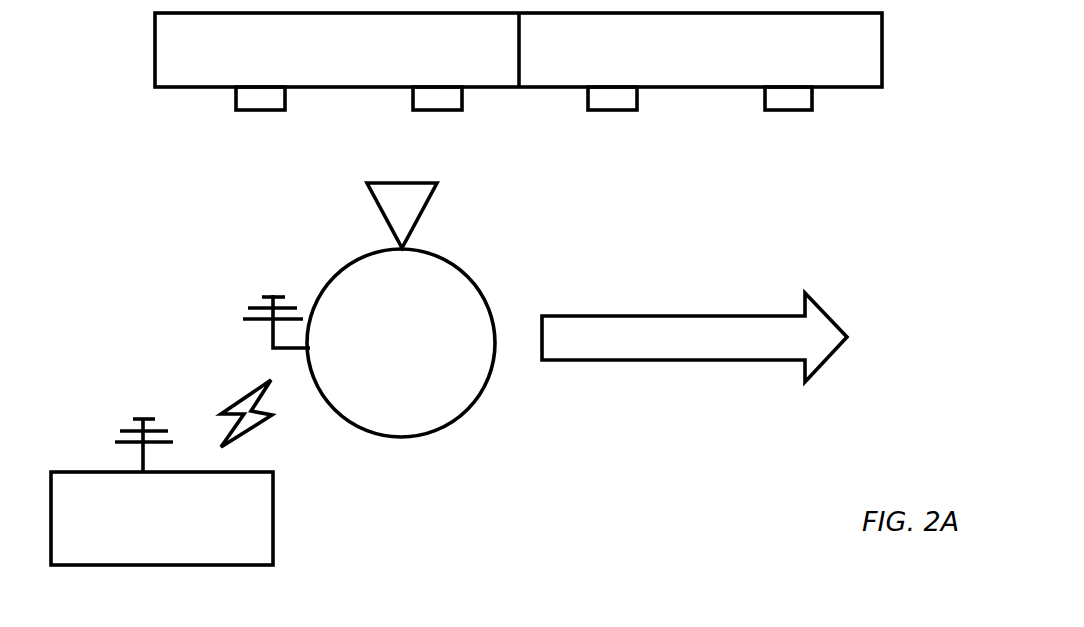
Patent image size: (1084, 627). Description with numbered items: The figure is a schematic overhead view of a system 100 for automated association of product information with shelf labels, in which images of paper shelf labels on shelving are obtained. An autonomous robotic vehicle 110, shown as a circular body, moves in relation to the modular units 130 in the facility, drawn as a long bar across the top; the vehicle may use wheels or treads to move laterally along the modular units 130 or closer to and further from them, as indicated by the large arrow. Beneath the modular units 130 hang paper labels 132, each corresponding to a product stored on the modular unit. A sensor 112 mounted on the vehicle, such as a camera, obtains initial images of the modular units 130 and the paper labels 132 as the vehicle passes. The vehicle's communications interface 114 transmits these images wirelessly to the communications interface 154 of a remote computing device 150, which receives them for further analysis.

The system 100 is at (155, 322).
The autonomous robotic vehicle 110 is at (468, 422).
The sensor 112 is at (438, 190).
The communications interface 114 is at (285, 353).
The modular units 130 is at (553, 89).
The paper labels 132 is at (413, 100).
The remote computing device 150 is at (276, 518).
The communications interface 154 is at (140, 453).